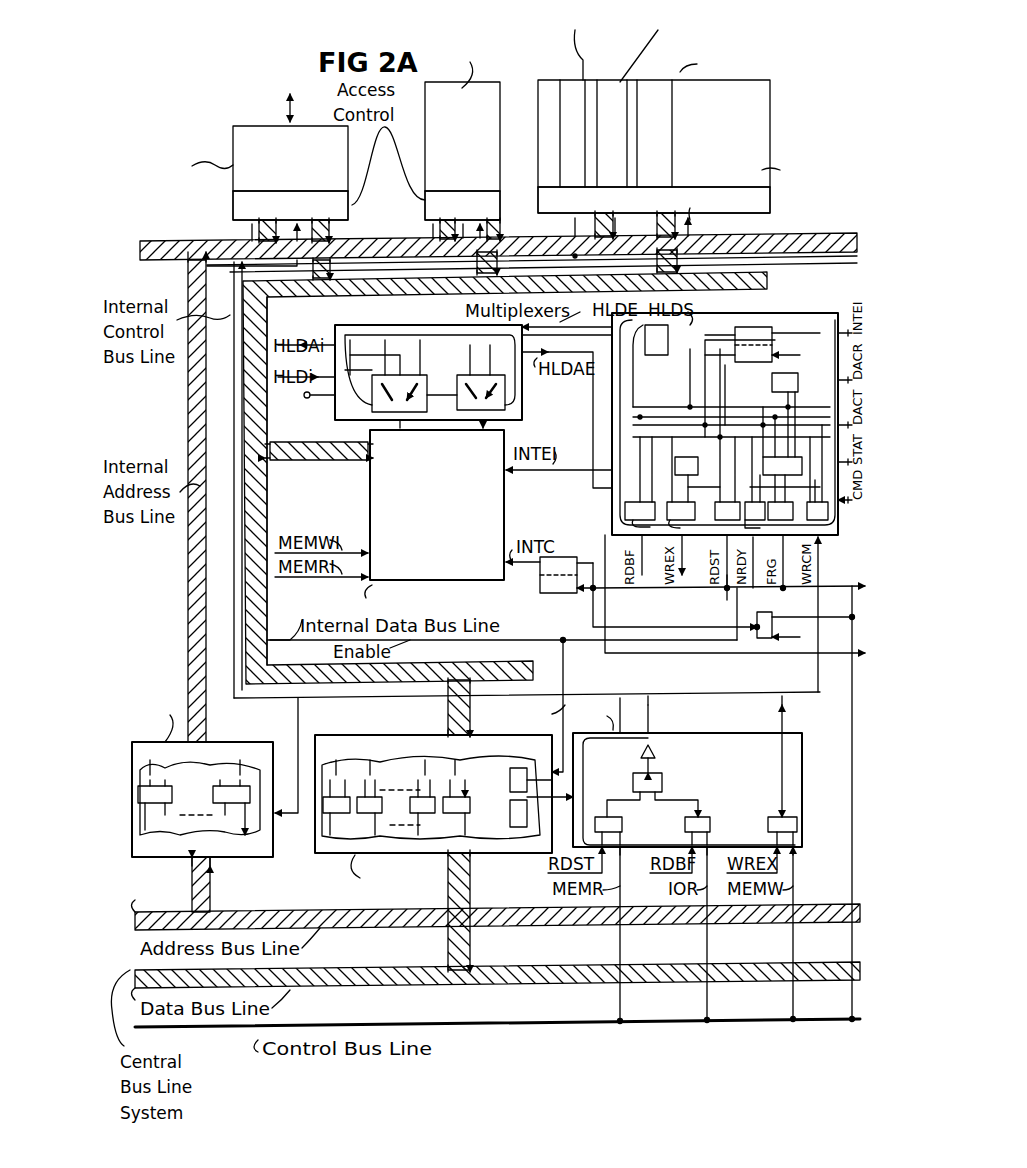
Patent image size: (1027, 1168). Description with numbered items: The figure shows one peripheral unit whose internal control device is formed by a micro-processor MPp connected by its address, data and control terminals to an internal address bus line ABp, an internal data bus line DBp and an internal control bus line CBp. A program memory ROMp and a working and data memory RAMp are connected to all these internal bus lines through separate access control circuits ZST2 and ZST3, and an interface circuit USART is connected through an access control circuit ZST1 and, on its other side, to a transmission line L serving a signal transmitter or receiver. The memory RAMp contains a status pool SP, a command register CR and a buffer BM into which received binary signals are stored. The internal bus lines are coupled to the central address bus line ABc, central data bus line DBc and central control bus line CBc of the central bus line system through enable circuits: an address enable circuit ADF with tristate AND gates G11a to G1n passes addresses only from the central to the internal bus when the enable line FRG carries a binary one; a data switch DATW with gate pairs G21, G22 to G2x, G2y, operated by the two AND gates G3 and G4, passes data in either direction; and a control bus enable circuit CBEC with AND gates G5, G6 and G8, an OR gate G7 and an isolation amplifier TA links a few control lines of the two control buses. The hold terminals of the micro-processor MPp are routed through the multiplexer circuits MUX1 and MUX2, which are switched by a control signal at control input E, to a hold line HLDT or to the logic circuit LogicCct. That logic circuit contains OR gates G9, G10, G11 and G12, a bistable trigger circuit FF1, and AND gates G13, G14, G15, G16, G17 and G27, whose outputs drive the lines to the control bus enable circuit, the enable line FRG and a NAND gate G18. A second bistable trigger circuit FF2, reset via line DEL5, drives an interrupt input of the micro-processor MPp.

The interface circuit USART is at (233, 173).
The access control circuit ZST1 is at (290, 205).
The transmission line L is at (290, 108).
The program memory ROMp is at (465, 118).
The access control circuit ZST2 is at (462, 205).
The working and data memory RAMp is at (771, 128).
The access control circuit ZST3 is at (656, 201).
The status pool SP is at (580, 80).
The command register CR is at (628, 80).
The buffer BM is at (650, 80).
The internal address bus line ABp is at (178, 605).
The internal control bus line CBp is at (230, 608).
The internal data bus line DBp is at (280, 598).
The multiplexer circuit MUX1 is at (400, 338).
The multiplexer circuit MUX2 is at (472, 372).
The hold signal line HLDT is at (380, 330).
The control input E is at (312, 396).
The micro-processor MPp is at (412, 520).
The bistable trigger circuit FF1 is at (755, 362).
The bistable trigger circuit FF2 is at (685, 592).
The logic circuit arrangement LogicCct is at (808, 320).
The OR gate G9 is at (790, 373).
The OR gate G10 is at (662, 360).
The OR gate G11 is at (698, 470).
The AND gate G11a is at (161, 785).
The OR gate G12 is at (765, 470).
The AND gate G13 is at (625, 511).
The AND gate G14 is at (667, 480).
The AND gate G15 is at (715, 500).
The NAND gate G16 is at (822, 535).
The AND gate G17 is at (828, 512).
The NAND gate G18 is at (762, 612).
The AND gate G27 is at (752, 500).
The line DEL5 is at (716, 592).
The address enable circuit ADF is at (258, 740).
The AND gate G1n is at (230, 779).
The enable line FRG is at (287, 755).
The data switch DATW is at (468, 735).
The AND gate G21 is at (335, 781).
The AND gate G22 is at (362, 775).
The AND gate G2x is at (412, 775).
The AND gate G2y is at (462, 775).
The AND gate G3 is at (514, 775).
The AND gate G4 is at (517, 850).
The control bus enable circuit CBEC is at (683, 751).
The isolation amplifier TA is at (656, 750).
The AND gate G5 is at (620, 825).
The AND gate G6 is at (709, 825).
The OR gate G7 is at (659, 782).
The AND gate G8 is at (780, 815).
The central address bus line ABc is at (300, 912).
The central data bus line DBc is at (306, 972).
The central control bus line CBc is at (306, 1030).